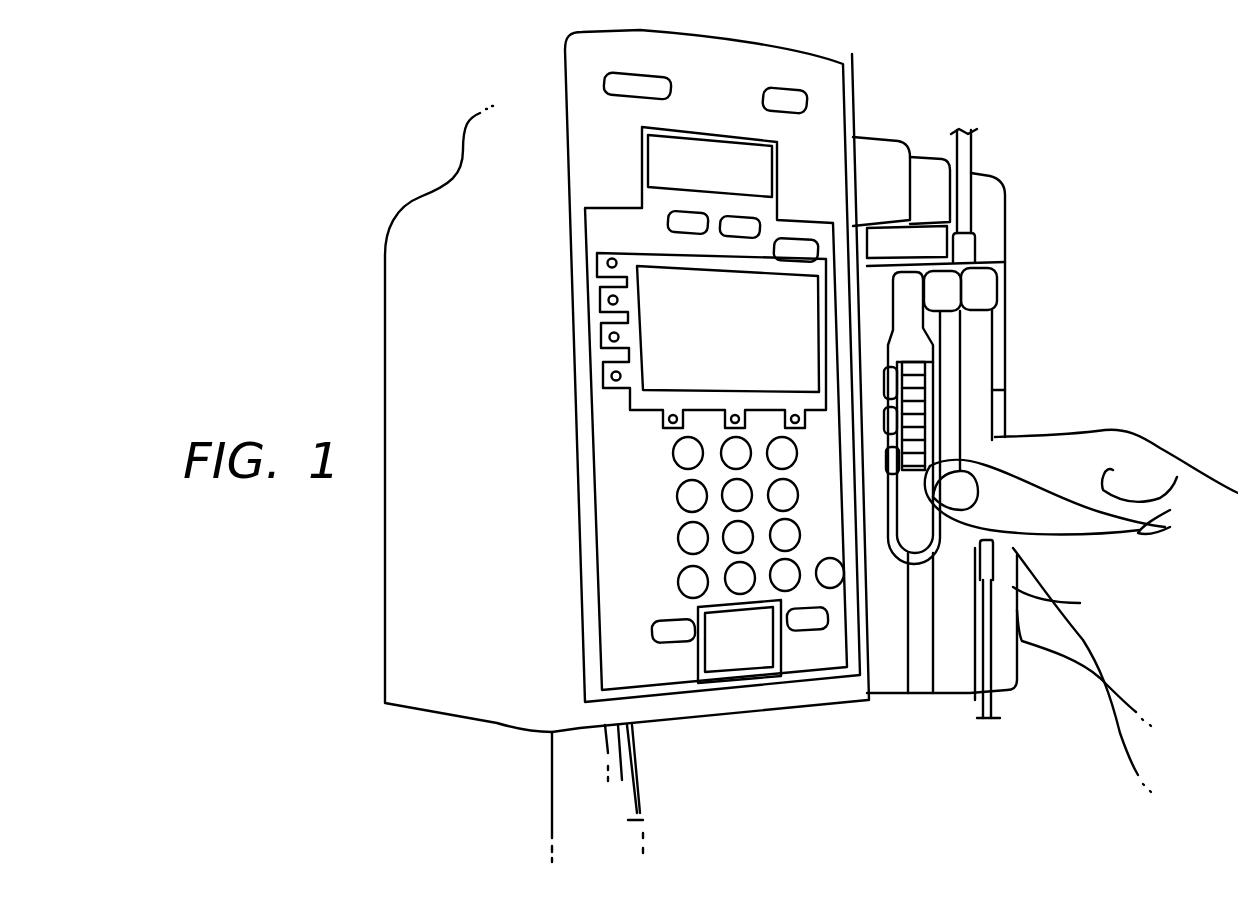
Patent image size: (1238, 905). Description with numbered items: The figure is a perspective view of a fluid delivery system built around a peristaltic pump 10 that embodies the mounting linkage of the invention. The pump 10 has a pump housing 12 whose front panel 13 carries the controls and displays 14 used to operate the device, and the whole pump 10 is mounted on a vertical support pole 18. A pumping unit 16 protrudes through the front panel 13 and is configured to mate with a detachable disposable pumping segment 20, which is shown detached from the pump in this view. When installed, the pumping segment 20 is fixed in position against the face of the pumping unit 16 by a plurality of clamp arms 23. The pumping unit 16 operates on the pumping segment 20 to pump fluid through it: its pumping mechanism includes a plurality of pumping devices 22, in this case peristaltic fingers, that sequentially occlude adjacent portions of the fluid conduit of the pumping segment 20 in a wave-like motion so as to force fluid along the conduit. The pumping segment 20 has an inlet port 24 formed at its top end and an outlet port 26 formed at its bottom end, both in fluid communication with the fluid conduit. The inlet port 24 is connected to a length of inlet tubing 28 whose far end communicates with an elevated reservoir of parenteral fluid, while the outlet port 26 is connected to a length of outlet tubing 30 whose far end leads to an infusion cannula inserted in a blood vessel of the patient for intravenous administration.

The peristaltic pump 10 is at (858, 47).
The pump housing 12 is at (702, 720).
The front panel 13 is at (832, 112).
The controls and displays 14 is at (668, 503).
The pumping unit 16 is at (897, 660).
The vertical support pole 18 is at (637, 818).
The detachable disposable pumping segment 20 is at (1006, 363).
The pumping devices 22 is at (906, 353).
The clamp arms 23 is at (884, 460).
The inlet port 24 is at (976, 250).
The outlet port 26 is at (996, 571).
The inlet tubing 28 is at (970, 150).
The outlet tubing 30 is at (1000, 703).